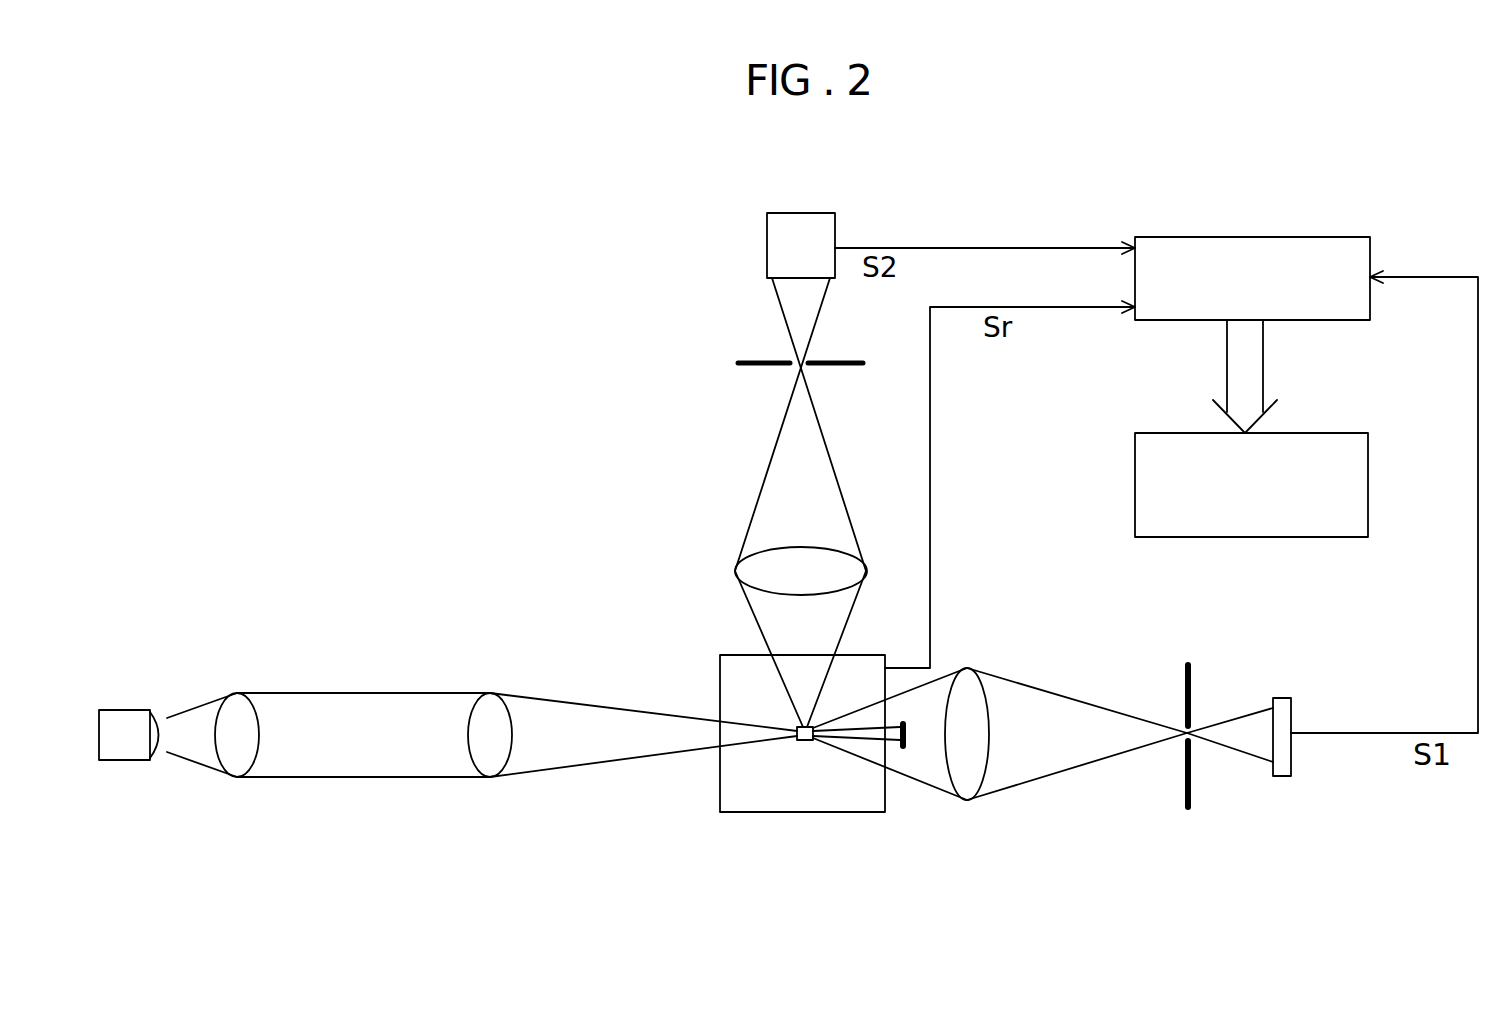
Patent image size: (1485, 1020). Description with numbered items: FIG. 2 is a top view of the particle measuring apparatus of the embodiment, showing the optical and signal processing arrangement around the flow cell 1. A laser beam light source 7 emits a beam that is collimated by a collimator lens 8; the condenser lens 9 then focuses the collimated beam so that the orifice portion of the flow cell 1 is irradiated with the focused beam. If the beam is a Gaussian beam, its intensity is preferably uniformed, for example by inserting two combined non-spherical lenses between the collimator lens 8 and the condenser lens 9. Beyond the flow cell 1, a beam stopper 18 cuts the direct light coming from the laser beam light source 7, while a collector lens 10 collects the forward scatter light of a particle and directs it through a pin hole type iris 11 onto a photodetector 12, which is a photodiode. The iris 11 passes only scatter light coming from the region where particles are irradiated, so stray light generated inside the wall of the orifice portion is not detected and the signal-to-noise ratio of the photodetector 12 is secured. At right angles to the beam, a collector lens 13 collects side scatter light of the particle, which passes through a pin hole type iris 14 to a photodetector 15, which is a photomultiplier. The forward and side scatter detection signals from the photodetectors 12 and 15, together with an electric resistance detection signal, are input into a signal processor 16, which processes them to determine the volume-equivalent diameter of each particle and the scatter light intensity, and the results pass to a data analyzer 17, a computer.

The flow cell 1 is at (740, 802).
The laser beam light source 7 is at (134, 710).
The collimator lens 8 is at (241, 706).
The condenser lens 9 is at (490, 706).
The collector lens 10 is at (967, 789).
The pin hole type iris 11 is at (1187, 812).
The photodetector (photodiode) 12 is at (1283, 762).
The collector lens 13 is at (752, 572).
The pin hole type iris 14 is at (866, 364).
The photodetector (photomultiplier) 15 is at (810, 222).
The signal processor 16 is at (1290, 245).
The data analyzer (computer) 17 is at (1153, 445).
The beam stopper 18 is at (912, 732).